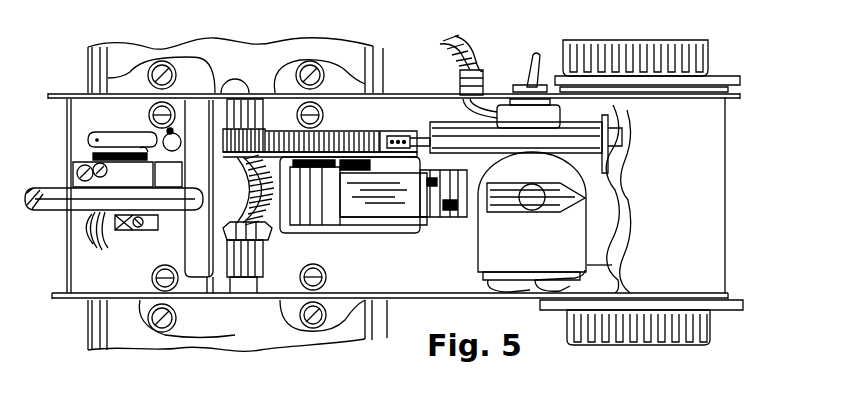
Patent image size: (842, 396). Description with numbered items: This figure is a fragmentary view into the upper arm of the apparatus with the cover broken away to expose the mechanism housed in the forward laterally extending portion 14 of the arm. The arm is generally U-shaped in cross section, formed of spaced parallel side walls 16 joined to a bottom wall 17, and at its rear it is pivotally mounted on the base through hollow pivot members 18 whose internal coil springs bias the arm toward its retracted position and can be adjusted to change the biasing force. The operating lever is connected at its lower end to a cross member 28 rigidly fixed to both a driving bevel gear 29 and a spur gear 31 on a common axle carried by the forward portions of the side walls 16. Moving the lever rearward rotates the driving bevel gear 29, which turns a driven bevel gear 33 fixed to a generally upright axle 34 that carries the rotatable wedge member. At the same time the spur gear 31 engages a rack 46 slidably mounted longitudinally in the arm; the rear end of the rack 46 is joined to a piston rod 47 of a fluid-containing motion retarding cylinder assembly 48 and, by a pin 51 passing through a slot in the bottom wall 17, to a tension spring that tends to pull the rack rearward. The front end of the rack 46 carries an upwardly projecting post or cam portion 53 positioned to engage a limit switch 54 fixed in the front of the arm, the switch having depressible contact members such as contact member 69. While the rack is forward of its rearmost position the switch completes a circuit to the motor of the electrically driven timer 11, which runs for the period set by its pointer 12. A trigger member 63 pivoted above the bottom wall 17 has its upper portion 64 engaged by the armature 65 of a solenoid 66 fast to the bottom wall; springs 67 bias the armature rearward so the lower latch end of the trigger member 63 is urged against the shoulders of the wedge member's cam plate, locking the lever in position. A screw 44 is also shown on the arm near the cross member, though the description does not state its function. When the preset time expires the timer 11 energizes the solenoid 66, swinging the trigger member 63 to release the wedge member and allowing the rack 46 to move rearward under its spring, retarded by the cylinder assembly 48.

The timer 11 is at (480, 220).
The pointer 12 is at (553, 207).
The forward laterally extending portion 14 is at (67, 150).
The side walls 16 is at (78, 92).
The bottom wall 17 is at (85, 264).
The hollow pivot members 18 is at (707, 43).
The cross member 28 is at (193, 235).
The driving bevel gear 29 is at (299, 277).
The spur gear 31 is at (258, 108).
The driven bevel gear 33 is at (272, 232).
The upright axle 34 is at (249, 162).
The screw 44 is at (152, 280).
The rack 46 is at (392, 134).
The piston rod 47 is at (418, 134).
The motion retarding cylinder assembly 48 is at (490, 140).
The pin 51 is at (398, 137).
The post or cam portion 53 is at (170, 157).
The limit switch 54 is at (107, 147).
The trigger member 63 is at (330, 236).
The upper portion of trigger member 64 is at (383, 188).
The armature 65 is at (348, 130).
The solenoid 66 is at (397, 237).
The springs 67 is at (364, 131).
The contact member 69 is at (113, 174).